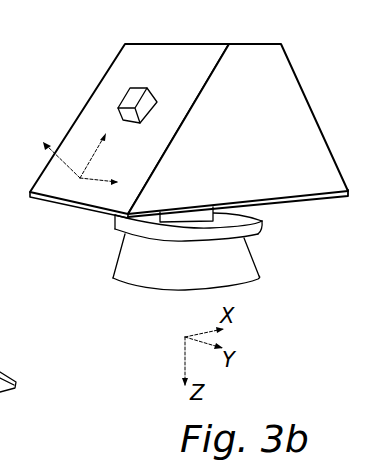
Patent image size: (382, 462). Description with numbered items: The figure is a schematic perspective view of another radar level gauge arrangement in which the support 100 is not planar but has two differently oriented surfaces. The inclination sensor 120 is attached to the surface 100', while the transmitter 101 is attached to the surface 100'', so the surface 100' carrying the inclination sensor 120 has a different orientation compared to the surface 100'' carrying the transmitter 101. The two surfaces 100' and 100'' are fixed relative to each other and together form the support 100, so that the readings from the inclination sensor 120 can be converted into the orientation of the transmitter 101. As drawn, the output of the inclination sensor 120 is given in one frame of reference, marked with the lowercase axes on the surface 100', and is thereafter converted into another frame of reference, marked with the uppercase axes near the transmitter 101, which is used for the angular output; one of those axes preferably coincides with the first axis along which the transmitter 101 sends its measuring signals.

The support 100 is at (186, 166).
The surface 100' is at (124, 131).
The surface 100'' is at (240, 146).
The transmitter 101 is at (245, 266).
The inclination sensor 120 is at (123, 95).